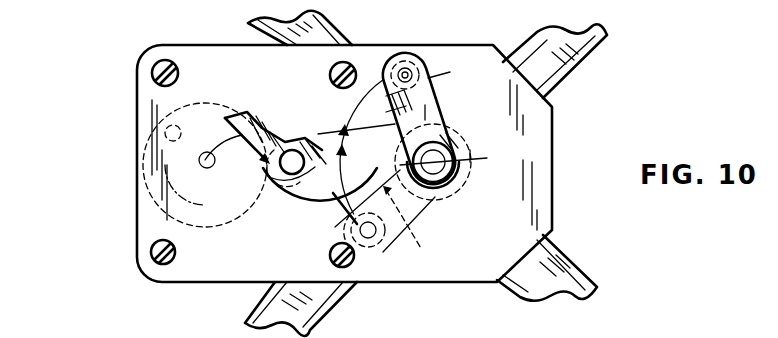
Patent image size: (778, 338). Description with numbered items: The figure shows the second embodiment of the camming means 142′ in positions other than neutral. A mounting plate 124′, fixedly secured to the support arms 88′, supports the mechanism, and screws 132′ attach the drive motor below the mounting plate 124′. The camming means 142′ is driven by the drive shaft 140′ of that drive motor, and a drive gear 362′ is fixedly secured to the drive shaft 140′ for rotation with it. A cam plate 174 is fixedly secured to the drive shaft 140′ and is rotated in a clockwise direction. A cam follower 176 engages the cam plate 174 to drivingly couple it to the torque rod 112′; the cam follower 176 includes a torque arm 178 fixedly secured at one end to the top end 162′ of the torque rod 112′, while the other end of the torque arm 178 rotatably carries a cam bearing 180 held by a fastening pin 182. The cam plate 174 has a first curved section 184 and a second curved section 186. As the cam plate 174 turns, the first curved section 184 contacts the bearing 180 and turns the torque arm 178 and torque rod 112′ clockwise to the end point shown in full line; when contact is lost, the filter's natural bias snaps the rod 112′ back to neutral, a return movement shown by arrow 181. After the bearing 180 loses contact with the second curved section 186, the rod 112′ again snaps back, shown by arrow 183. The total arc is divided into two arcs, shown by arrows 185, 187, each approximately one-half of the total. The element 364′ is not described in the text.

The support arm 88′ is at (585, 272).
The screw 132′ is at (372, 265).
The mounting plate 124′ is at (545, 164).
The camming means 142′ is at (105, 183).
The opening 364′ is at (137, 148).
The drive gear 362′ is at (208, 180).
The first curved section 184 is at (384, 134).
The arrow 187 is at (358, 149).
The cam plate 174 is at (276, 123).
The drive shaft 140′ is at (268, 198).
The second curved section 186 is at (242, 110).
The arrow 185 is at (362, 100).
The arrow 181 is at (420, 118).
The cam bearing 180 is at (423, 75).
The fastening pin 182 is at (405, 72).
The cam follower 176 is at (450, 97).
The torque arm 178 is at (410, 112).
The top end 162′ is at (447, 196).
The torque rod 112′ is at (463, 157).
The arrow 183 is at (387, 213).